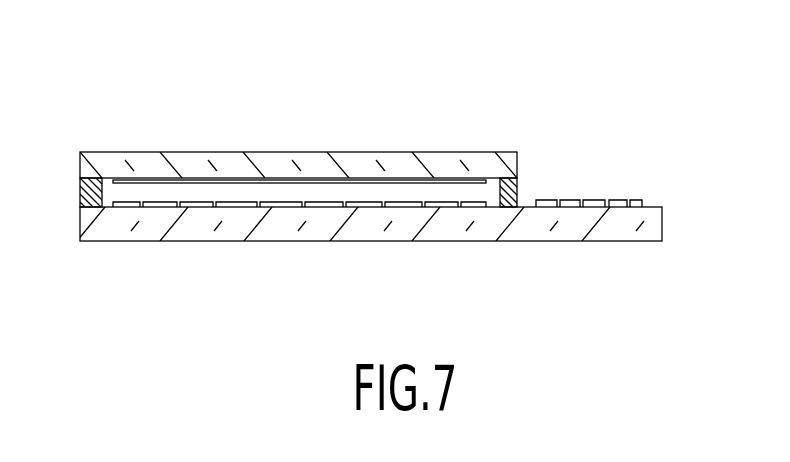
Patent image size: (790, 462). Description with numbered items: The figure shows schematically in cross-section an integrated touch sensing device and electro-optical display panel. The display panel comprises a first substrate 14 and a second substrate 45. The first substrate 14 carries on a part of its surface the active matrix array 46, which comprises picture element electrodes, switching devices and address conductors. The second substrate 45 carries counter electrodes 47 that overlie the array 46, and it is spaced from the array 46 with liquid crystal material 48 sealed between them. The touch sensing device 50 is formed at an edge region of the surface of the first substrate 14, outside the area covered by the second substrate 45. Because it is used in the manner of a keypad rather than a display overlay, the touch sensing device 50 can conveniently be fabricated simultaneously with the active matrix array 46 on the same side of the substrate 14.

The first substrate 14 is at (482, 227).
The second substrate 45 is at (483, 153).
The active matrix array 46 is at (273, 208).
The counter electrodes 47 is at (375, 179).
The liquid crystal material 48 is at (237, 192).
The touch sensing device 50 is at (614, 200).